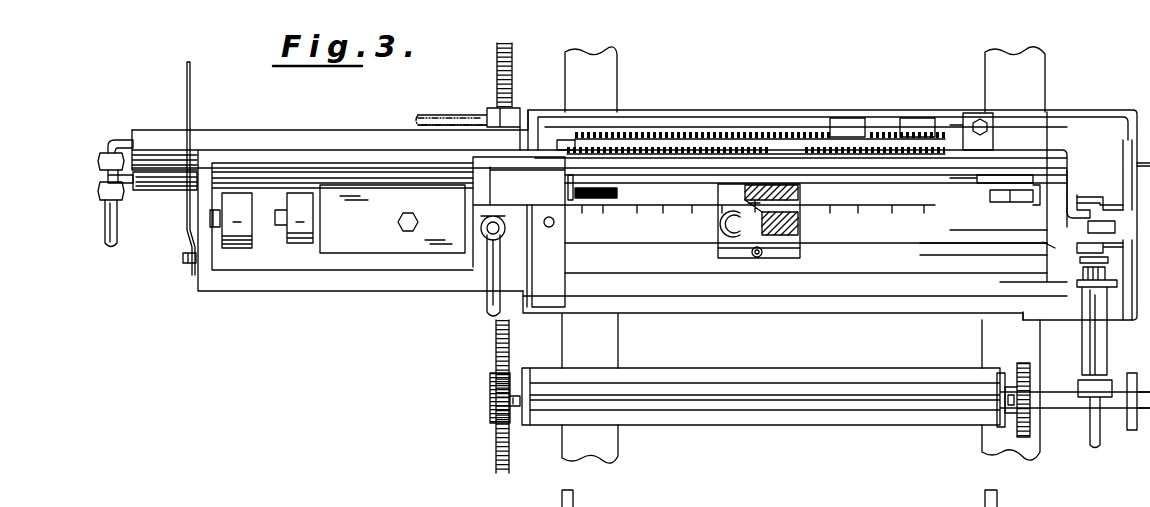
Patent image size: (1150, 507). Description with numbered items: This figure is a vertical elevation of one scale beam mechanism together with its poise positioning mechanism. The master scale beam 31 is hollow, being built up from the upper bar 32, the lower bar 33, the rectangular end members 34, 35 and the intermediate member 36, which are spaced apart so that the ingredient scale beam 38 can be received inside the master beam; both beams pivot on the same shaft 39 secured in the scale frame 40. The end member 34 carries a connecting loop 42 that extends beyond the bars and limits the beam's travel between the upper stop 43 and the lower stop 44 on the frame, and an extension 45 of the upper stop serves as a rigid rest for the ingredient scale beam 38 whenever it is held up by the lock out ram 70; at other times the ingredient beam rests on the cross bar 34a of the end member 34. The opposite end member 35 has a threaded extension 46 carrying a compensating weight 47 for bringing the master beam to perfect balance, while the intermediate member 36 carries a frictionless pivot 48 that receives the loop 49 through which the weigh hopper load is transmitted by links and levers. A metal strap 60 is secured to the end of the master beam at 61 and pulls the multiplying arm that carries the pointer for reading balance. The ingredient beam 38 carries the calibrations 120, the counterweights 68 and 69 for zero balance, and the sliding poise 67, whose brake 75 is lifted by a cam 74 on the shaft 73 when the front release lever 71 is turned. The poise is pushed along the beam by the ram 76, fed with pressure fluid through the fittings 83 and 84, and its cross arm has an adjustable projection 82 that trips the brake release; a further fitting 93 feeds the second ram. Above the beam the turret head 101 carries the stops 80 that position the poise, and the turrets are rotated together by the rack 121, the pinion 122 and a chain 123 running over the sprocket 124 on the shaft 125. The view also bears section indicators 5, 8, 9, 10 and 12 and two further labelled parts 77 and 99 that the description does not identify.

The section line 5- 5 is at (100, 157).
The section line 8- 8 is at (1058, 81).
The section line 9- 9 is at (648, 83).
The section line 10- 10 is at (593, 164).
The section line 12- 12 is at (480, 179).
The master scale beam 31 is at (848, 283).
The upper bar 32 is at (302, 150).
The lower bar 33 is at (778, 291).
The end member 34 is at (1062, 263).
The cross bar 34a is at (1050, 250).
The end member 35 is at (200, 279).
The intermediate member 36 is at (558, 191).
The ingredient scale beam 38 is at (920, 244).
The shaft 39 is at (549, 217).
The scale frame 40 is at (558, 260).
The connecting loop 42 is at (1101, 227).
The upper stop 43 is at (1112, 202).
The lower stop 44 is at (1100, 246).
The extension 45 is at (1082, 200).
The threaded extension 46 is at (210, 215).
The compensating weight 47 is at (234, 249).
The frictionless pivot 48 is at (493, 216).
The loop 49 is at (487, 306).
The metal strap 60 is at (191, 77).
The strap securing point 61 is at (182, 259).
The poise 67 is at (772, 185).
The counterweight 68 is at (392, 219).
The counterweight 69 is at (292, 244).
The lock out ram 70 is at (1090, 338).
The release lever 71 is at (722, 254).
The shaft 73 is at (800, 253).
The cam 74 is at (736, 263).
The brake 75 is at (755, 185).
The ram 76 is at (149, 133).
The lower head block 77 is at (150, 195).
The stop 80 is at (915, 118).
The adjustable projection 82 is at (590, 222).
The fitting 83 is at (119, 139).
The fitting 84 is at (514, 118).
The fitting 93 is at (116, 183).
The pipe 99 is at (106, 237).
The turret head 101 is at (780, 135).
The calibrations 120 is at (667, 220).
The rack 121 is at (497, 71).
The pinion 122 is at (490, 393).
The chain 123 is at (1023, 440).
The sprocket 124 is at (1020, 364).
The shaft 125 is at (762, 384).